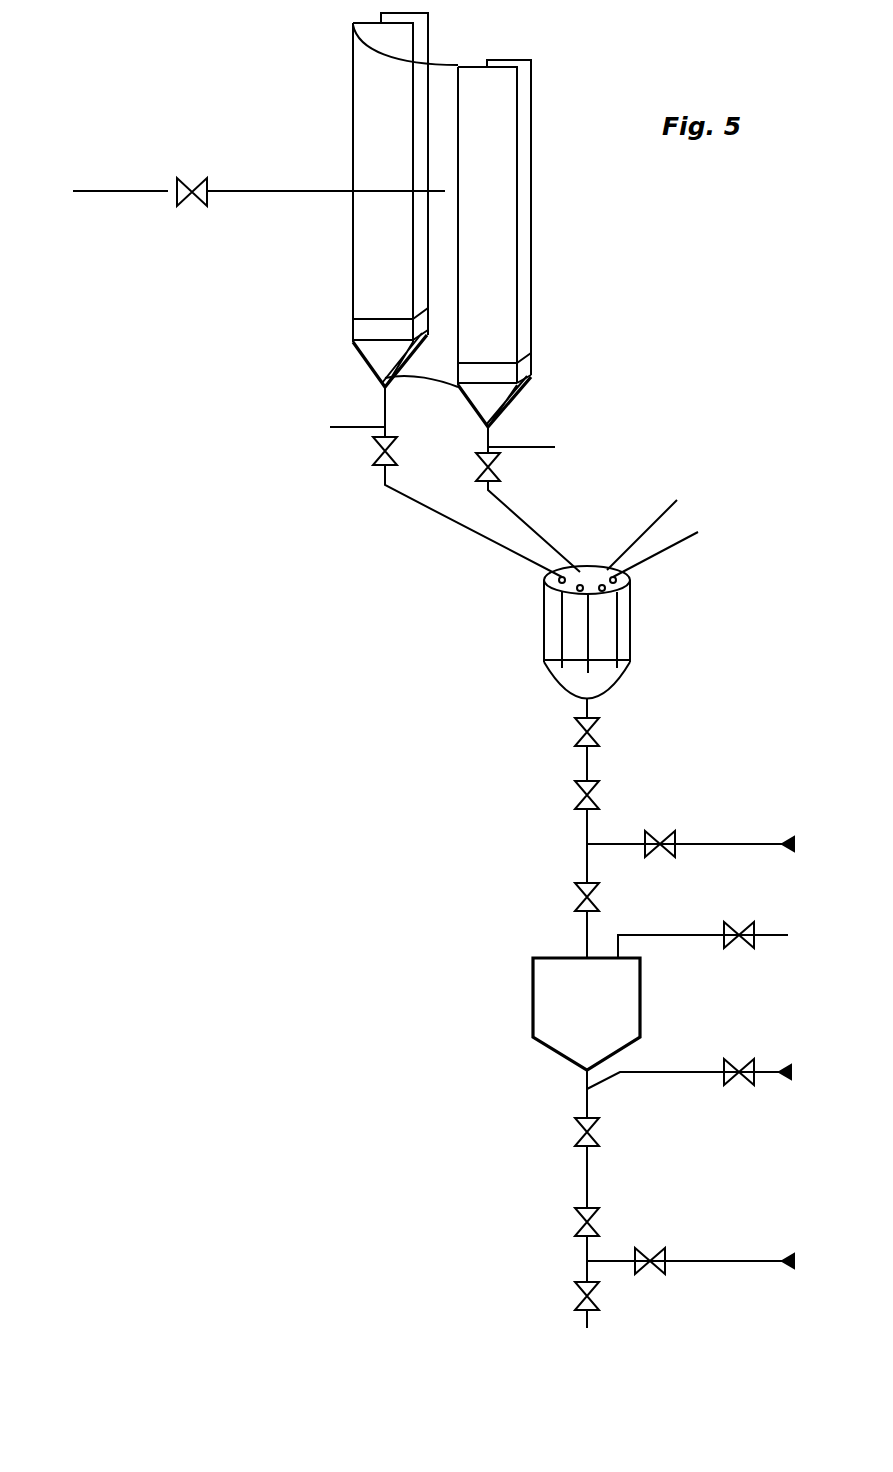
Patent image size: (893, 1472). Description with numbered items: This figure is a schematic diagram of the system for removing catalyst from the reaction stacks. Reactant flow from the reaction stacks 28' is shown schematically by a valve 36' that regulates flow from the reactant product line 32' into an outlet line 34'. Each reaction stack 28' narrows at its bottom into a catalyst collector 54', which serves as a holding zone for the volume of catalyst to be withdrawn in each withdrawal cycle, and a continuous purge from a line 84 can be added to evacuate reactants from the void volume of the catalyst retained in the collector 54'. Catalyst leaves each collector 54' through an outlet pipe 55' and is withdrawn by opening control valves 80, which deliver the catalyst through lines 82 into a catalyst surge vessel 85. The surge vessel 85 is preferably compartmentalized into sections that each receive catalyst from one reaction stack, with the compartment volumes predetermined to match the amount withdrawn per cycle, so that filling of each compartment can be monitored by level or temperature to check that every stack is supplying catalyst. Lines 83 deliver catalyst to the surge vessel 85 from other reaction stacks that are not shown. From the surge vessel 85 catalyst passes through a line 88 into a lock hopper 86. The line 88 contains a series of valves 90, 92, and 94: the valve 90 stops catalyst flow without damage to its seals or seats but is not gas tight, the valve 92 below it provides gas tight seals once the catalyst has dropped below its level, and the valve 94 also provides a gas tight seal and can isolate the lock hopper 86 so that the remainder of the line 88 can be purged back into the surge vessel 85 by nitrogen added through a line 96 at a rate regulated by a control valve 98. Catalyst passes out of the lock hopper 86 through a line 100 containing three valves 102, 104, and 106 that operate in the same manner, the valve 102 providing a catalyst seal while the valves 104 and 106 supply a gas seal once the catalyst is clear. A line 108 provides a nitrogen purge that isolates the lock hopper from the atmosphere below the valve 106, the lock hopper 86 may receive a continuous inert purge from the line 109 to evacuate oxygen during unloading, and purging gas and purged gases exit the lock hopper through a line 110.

The reaction stack 28' is at (439, 200).
The reactant product line 32' is at (326, 174).
The outlet line 34' is at (109, 173).
The valve 36' is at (183, 167).
The catalyst collector 54' is at (443, 380).
The outlet pipe 55' is at (440, 419).
The control valve 80 is at (384, 455).
The line 82 is at (452, 520).
The line 83 is at (658, 520).
The purge line 84 is at (350, 428).
The catalyst surge vessel 85 is at (632, 638).
The lock hopper 86 is at (640, 988).
The line 88 is at (587, 815).
The valve 90 is at (592, 735).
The valve 92 is at (592, 797).
The valve 94 is at (592, 899).
The line 96 is at (614, 843).
The control valve 98 is at (663, 838).
The line 100 is at (588, 1178).
The valve 102 is at (592, 1134).
The valve 104 is at (592, 1222).
The valve 106 is at (592, 1298).
The line 108 is at (612, 1260).
The line 109 is at (663, 1070).
The line 110 is at (660, 935).